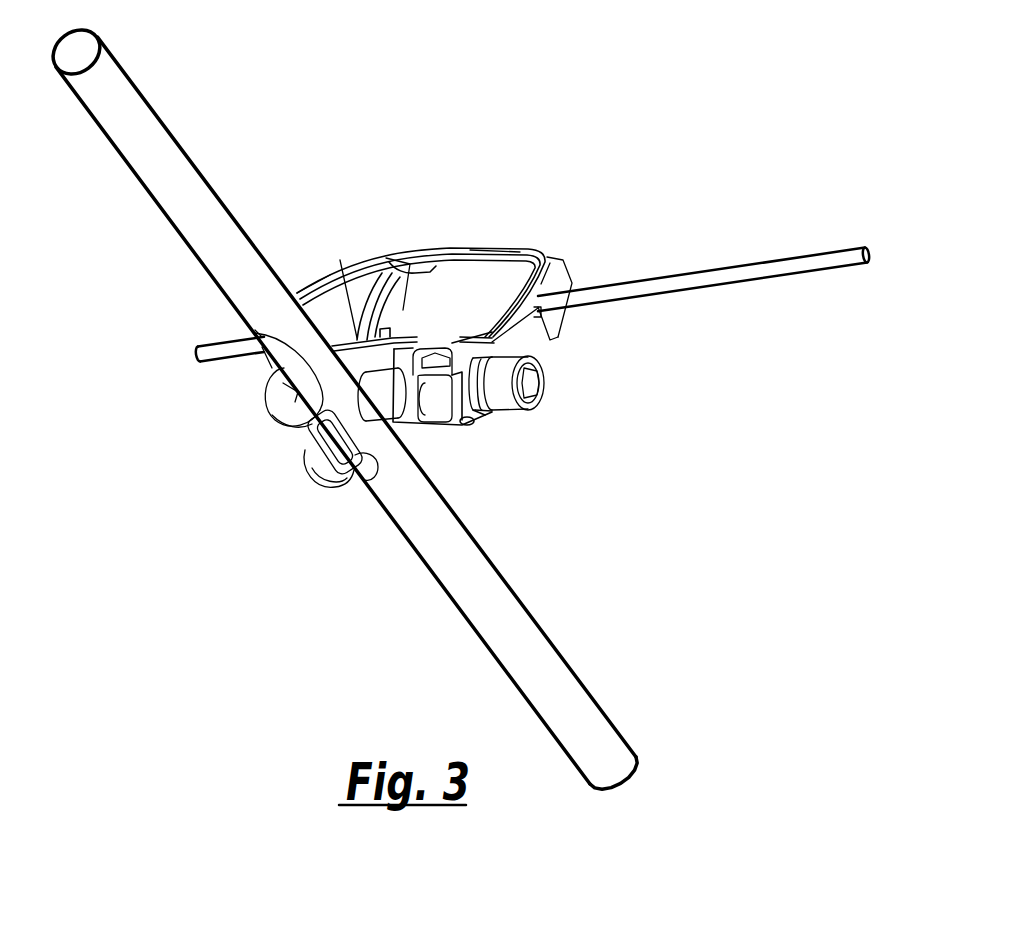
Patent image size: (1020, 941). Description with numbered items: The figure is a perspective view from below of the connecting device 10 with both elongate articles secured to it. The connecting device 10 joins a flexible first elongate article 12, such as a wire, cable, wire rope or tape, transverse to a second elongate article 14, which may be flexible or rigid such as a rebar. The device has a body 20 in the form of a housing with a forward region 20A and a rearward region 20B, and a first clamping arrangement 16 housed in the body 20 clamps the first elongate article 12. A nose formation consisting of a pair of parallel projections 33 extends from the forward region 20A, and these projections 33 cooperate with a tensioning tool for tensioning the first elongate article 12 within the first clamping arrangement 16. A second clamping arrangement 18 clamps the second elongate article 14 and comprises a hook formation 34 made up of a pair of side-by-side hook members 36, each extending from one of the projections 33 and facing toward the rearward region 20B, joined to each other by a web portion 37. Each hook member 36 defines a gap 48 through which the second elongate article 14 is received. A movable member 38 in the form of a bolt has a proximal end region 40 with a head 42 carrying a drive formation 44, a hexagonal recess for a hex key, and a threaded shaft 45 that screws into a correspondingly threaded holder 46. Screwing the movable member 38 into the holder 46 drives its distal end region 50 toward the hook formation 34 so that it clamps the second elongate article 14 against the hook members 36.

The connecting device 10 is at (468, 210).
The first elongate article 12 is at (792, 268).
The second elongate article 14 is at (533, 645).
The first clamping arrangement 16 is at (562, 248).
The second clamping arrangement 18 is at (518, 483).
The body 20 is at (443, 293).
The forward region 20A is at (403, 310).
The rearward region 20B is at (519, 274).
The projections 33 is at (302, 288).
The hook formation 34 is at (248, 452).
The hook members 36 is at (280, 400).
The web portion 37 is at (307, 448).
The movable member 38 is at (581, 398).
The proximal end region 40 is at (556, 375).
The head 42 is at (517, 413).
The drive formation 44 is at (530, 383).
The threaded shaft 45 is at (430, 395).
The holder 46 is at (478, 443).
The gap 48 is at (255, 328).
The distal end region 50 is at (357, 338).